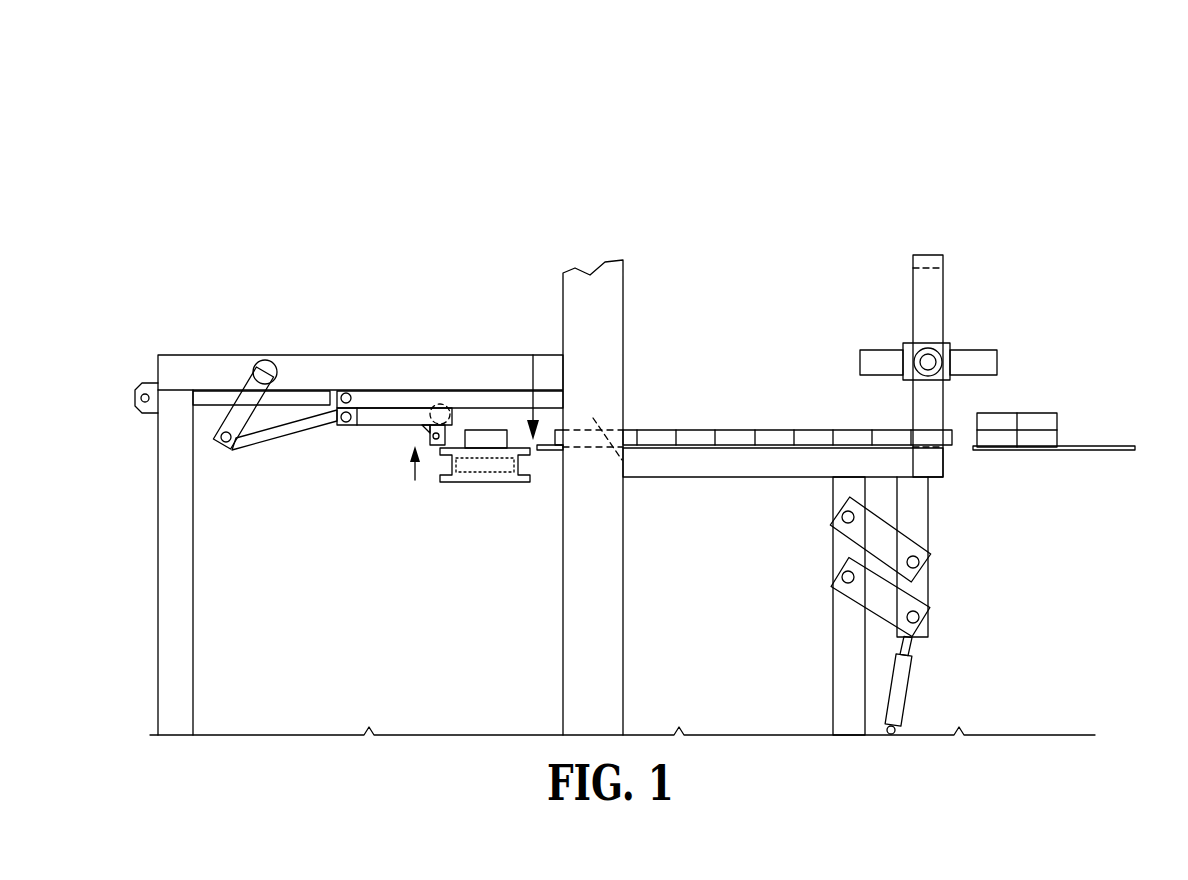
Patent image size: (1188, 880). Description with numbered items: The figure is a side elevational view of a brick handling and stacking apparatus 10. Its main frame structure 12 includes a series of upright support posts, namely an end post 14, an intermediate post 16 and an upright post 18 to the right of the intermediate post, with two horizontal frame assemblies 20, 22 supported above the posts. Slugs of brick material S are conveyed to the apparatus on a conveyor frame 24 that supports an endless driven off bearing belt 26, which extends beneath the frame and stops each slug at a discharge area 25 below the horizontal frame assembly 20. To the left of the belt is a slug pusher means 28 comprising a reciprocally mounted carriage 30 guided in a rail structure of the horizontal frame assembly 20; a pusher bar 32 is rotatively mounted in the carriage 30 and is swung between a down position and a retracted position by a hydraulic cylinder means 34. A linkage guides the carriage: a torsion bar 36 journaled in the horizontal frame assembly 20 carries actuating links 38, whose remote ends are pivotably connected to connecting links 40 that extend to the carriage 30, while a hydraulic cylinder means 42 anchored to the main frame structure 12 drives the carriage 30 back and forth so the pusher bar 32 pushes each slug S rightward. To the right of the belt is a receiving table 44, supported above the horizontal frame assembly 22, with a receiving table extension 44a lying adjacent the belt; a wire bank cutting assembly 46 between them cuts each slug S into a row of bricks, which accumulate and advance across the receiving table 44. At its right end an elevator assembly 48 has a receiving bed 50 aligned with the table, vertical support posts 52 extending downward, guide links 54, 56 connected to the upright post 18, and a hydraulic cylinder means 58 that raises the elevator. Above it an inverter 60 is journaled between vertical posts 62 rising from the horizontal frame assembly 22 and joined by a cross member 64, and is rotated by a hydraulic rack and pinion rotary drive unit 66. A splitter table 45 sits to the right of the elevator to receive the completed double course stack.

The brick handling and stacking apparatus 10 is at (354, 180).
The main frame structure 12 is at (132, 611).
The end posts 14 is at (190, 670).
The intermediate posts 16 is at (615, 668).
The upright posts 18 is at (838, 668).
The horizontal frame assembly 20 is at (200, 355).
The horizontal frame assembly 22 is at (740, 470).
The conveyor frame 24 is at (450, 483).
The discharge area 25 is at (542, 355).
The off bearing belt 26 is at (470, 455).
The slug pusher means 28 is at (410, 442).
The carriage 30 is at (375, 422).
The pusher bar 32 is at (432, 448).
The hydraulic cylinder means 34 is at (389, 491).
The torsion bar 36 is at (277, 360).
The actuating links 38 is at (212, 442).
The connecting links 40 is at (292, 432).
The hydraulic cylinder means 42 is at (330, 390).
The receiving table 44 is at (770, 450).
The receiving table extension 44a is at (553, 450).
The splitter table 45 is at (1050, 448).
The wire bank cutting assembly 46 is at (612, 420).
The elevator assembly 48 is at (1000, 608).
The receiving bed 50 is at (905, 455).
The vertical support posts 52 is at (925, 530).
The guide links 54 is at (880, 600).
The guide links 56 is at (880, 545).
The hydraulic cylinder means 58 is at (900, 690).
The inverter 60 is at (992, 328).
The vertical posts 62 is at (935, 305).
The cross member 64 is at (930, 262).
The hydraulic rack and pinion rotary drive unit 66 is at (947, 365).
The brick slug S is at (488, 428).